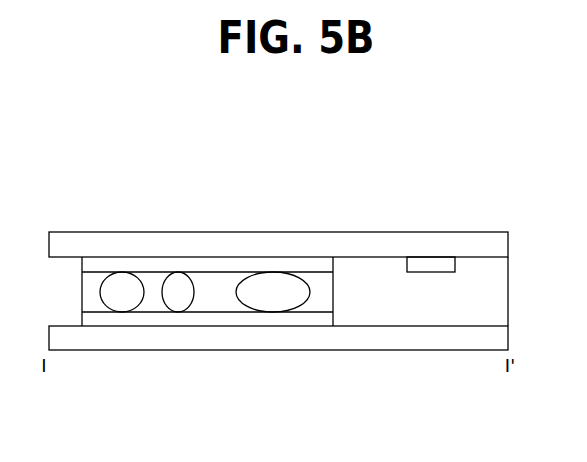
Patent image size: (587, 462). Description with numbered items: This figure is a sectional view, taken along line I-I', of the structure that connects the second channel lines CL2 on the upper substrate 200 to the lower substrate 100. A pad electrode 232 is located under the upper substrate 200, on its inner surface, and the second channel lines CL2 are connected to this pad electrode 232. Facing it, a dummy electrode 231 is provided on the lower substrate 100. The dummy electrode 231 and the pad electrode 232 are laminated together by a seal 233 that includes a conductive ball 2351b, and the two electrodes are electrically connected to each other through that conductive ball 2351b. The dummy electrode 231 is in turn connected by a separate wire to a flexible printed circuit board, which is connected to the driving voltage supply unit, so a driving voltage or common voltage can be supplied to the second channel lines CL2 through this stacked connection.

The lower substrate 100 is at (402, 345).
The upper substrate 200 is at (313, 240).
The dummy electrode 231 is at (263, 320).
The pad electrode 232 is at (137, 262).
The seal 233 is at (93, 283).
The conductive ball 2351b is at (130, 308).
The second channel line CL2 is at (440, 265).